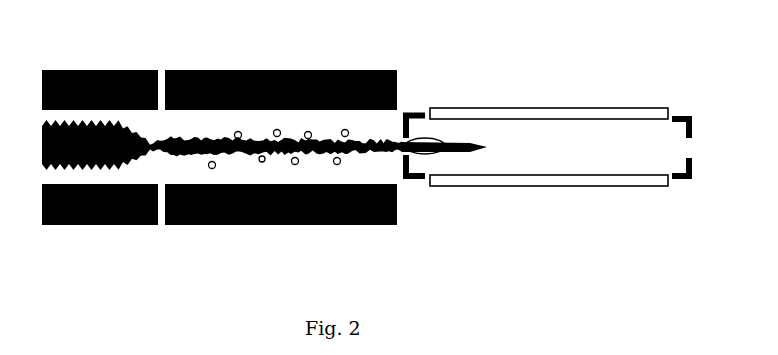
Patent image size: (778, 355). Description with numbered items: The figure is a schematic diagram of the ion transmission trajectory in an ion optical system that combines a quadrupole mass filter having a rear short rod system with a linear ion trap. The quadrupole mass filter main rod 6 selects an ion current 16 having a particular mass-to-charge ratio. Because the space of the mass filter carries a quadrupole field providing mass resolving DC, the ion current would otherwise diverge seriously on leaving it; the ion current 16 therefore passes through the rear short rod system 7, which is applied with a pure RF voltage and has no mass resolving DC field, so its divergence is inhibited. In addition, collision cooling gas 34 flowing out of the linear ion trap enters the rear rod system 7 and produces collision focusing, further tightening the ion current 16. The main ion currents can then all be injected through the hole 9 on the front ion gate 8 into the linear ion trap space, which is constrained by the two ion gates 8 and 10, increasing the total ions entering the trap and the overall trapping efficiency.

The quadrupole mass filter main rod 6 is at (128, 70).
The rear short rod system 7 is at (305, 70).
The front ion gate 8 is at (417, 180).
The hole 9 is at (418, 118).
The ion gate 10 is at (690, 179).
The ion current 16 is at (486, 142).
The collision cooling gas 34 is at (297, 165).